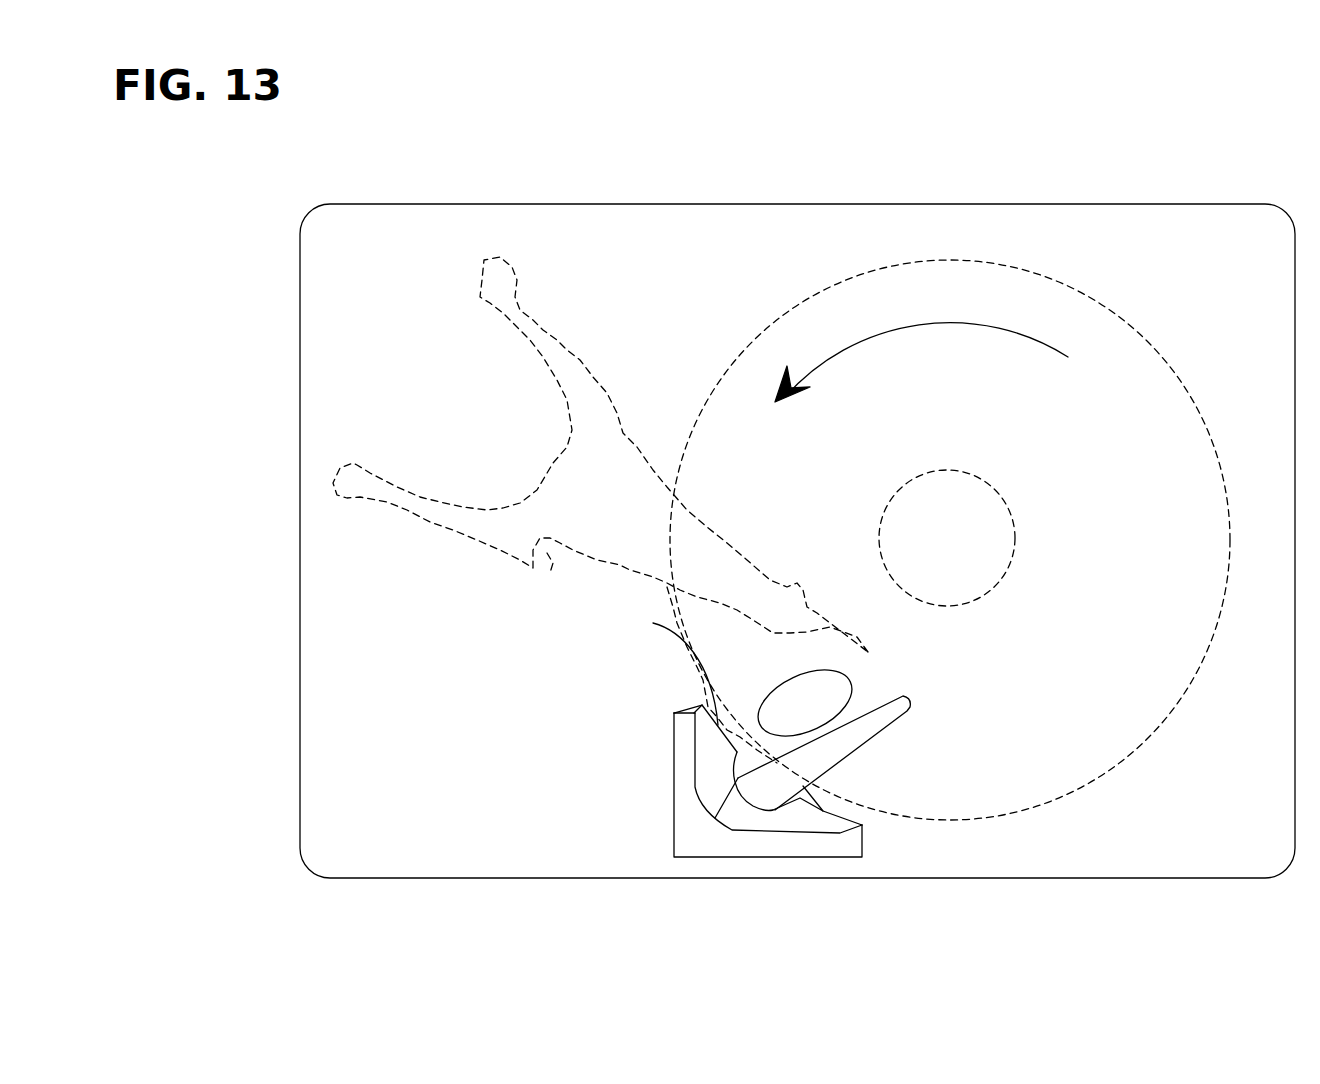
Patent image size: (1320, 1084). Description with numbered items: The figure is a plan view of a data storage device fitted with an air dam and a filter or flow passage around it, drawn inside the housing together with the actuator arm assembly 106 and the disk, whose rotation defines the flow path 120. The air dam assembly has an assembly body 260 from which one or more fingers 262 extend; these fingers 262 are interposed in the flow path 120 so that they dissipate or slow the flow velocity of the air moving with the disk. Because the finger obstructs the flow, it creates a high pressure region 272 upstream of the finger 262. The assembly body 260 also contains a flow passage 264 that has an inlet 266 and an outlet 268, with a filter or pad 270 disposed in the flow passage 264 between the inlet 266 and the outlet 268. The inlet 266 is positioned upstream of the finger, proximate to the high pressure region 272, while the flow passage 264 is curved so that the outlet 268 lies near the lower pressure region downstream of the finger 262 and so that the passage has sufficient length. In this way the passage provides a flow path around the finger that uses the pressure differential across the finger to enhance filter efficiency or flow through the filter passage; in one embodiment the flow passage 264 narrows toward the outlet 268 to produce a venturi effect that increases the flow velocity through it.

The actuator arm assembly 106 is at (590, 347).
The flow path 120 is at (916, 322).
The assembly body 260 is at (863, 837).
The fingers 262 is at (905, 712).
The flow passage 264 is at (673, 727).
The inlet 266 is at (660, 661).
The outlet 268 is at (827, 807).
The filter or pad 270 is at (733, 812).
The high pressure region 272 is at (853, 677).